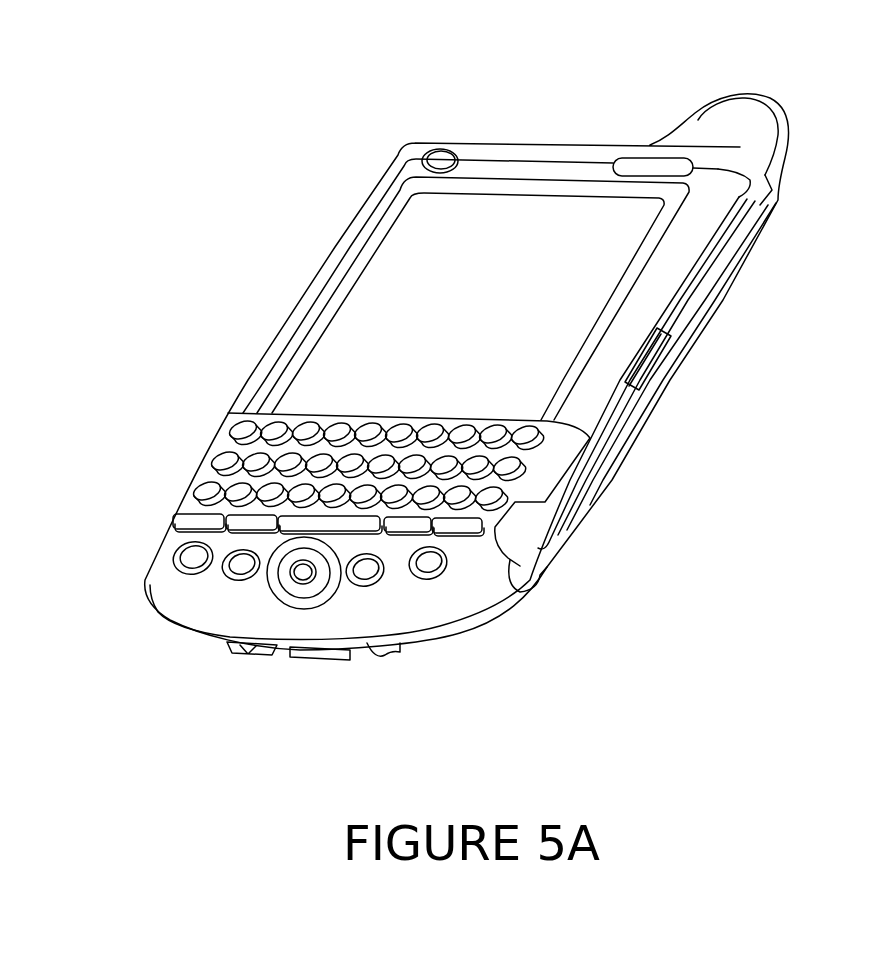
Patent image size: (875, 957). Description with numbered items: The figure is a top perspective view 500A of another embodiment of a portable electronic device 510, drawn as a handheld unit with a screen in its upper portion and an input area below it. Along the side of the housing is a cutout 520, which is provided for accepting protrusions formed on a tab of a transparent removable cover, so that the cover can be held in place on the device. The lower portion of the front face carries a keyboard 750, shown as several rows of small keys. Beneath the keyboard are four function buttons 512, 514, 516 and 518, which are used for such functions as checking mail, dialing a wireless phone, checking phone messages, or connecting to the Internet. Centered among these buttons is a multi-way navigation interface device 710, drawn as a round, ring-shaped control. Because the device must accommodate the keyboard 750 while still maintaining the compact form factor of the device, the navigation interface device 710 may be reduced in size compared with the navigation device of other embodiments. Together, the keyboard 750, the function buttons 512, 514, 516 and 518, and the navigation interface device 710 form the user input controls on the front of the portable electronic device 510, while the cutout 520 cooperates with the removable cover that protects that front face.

The top perspective view 500A is at (88, 51).
The portable electronic device 510 is at (335, 247).
The cutout 520 is at (660, 357).
The keyboard 750 is at (222, 409).
The function button 512 is at (173, 562).
The function button 514 is at (227, 573).
The multi-way navigation interface device 710 is at (272, 596).
The function button 516 is at (362, 587).
The function button 518 is at (427, 587).